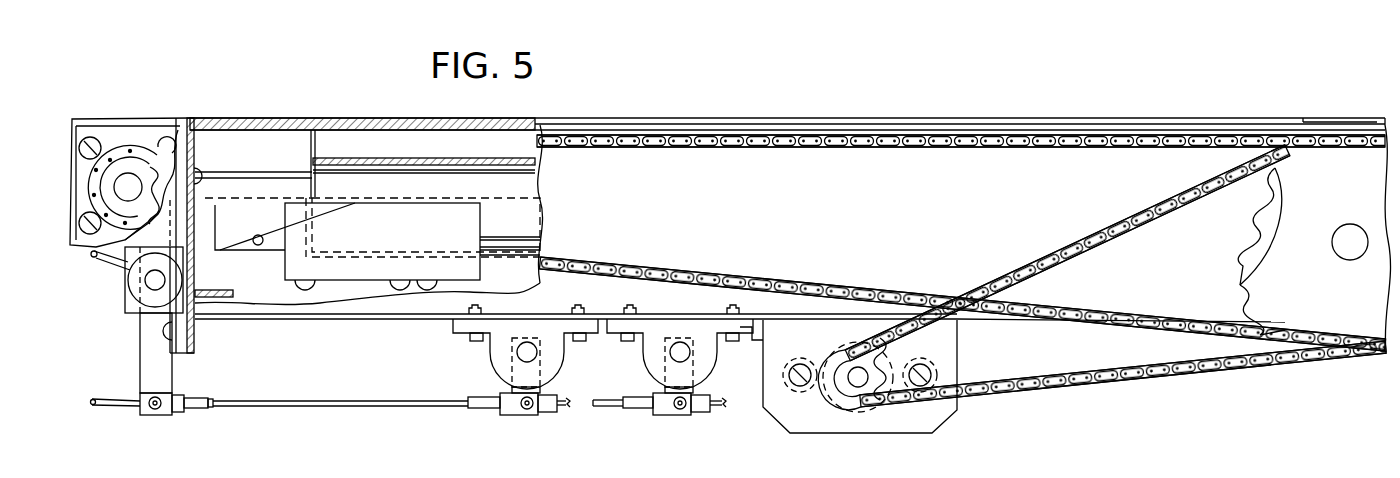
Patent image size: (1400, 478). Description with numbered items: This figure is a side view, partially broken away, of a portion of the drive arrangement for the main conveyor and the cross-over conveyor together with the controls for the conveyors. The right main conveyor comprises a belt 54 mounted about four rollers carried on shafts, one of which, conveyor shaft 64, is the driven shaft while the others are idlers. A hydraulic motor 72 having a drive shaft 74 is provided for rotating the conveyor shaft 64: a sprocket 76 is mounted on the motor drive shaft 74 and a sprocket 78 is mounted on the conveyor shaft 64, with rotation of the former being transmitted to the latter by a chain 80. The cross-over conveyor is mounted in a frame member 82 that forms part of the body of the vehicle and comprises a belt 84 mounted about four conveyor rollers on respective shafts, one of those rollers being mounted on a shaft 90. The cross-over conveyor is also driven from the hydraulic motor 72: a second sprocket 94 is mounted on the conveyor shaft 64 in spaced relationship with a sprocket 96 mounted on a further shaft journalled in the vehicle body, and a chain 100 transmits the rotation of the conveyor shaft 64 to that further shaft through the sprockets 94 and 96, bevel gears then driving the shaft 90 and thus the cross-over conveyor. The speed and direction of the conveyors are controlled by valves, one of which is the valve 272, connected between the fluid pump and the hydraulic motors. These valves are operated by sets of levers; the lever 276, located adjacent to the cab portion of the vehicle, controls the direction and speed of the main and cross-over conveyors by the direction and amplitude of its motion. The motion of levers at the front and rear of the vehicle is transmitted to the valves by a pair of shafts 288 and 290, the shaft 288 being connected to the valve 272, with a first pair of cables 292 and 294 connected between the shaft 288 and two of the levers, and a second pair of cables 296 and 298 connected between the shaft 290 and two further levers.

The belt 54 is at (1341, 122).
The conveyor shaft 64 is at (1345, 258).
The hydraulic motor 72 is at (843, 417).
The drive shaft 74 is at (850, 372).
The sprocket 76 is at (888, 351).
The sprocket 78 is at (1238, 234).
The chain 80 is at (1162, 374).
The frame member 82 is at (1237, 118).
The belt 84 is at (497, 160).
The shaft 90 is at (256, 184).
The second sprocket 94 is at (1250, 287).
The sprocket 96 is at (128, 168).
The chain 100 is at (822, 288).
The valve 272 is at (476, 219).
The lever 276 is at (100, 272).
The shaft 288 is at (517, 353).
The shaft 290 is at (670, 353).
The cable 292 is at (132, 398).
The cable 294 is at (108, 412).
The cable 296 is at (576, 392).
The cable 298 is at (714, 402).